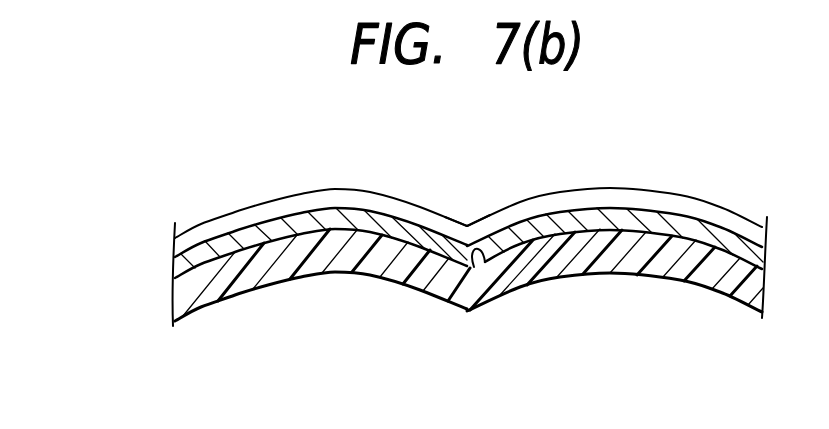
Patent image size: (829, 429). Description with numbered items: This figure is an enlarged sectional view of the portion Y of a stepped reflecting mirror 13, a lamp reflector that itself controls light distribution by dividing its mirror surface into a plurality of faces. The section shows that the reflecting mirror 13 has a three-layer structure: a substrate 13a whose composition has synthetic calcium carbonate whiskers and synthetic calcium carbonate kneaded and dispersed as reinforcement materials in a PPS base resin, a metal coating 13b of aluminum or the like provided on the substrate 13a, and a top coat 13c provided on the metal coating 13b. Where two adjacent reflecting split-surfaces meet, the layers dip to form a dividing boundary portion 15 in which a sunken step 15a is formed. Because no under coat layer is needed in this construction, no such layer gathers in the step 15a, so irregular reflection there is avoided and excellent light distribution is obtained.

The stepped reflecting mirror 13 is at (470, 245).
The substrate 13a is at (442, 282).
The metal coating 13b is at (670, 215).
The top coat 13c is at (572, 193).
The division boundary portion 15 is at (463, 211).
The step 15a is at (483, 253).
The portion Y is at (293, 116).